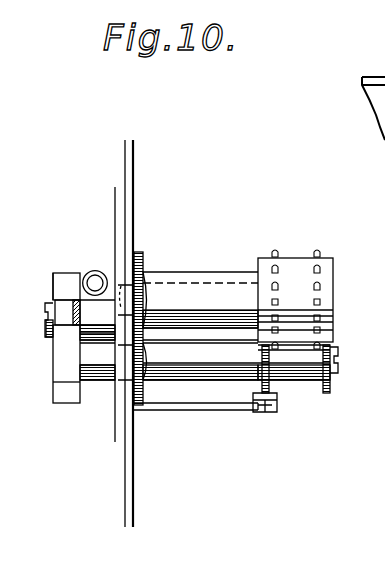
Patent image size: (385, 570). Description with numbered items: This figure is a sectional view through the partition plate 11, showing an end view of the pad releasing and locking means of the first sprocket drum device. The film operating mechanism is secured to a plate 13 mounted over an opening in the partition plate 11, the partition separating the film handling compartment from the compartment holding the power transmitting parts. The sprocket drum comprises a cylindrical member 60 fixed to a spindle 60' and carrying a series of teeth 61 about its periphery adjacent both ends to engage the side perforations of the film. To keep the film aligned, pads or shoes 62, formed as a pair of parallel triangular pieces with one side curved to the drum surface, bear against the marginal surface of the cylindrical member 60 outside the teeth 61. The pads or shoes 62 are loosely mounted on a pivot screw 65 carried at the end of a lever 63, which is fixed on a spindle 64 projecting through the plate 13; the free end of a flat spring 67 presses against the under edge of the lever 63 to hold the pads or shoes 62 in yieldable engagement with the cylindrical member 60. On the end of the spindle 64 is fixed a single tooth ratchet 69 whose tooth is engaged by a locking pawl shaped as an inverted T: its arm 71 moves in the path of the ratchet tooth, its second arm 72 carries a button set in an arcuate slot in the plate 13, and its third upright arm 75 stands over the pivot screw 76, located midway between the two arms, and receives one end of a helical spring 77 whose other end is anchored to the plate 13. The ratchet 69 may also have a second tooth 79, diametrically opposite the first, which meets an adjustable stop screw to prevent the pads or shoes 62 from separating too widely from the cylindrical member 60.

The partition plate 11 is at (128, 168).
The plate 13 is at (114, 225).
The cylindrical member 60 is at (312, 300).
The spindle 60' is at (200, 294).
The teeth 61 is at (312, 268).
The pads or shoes 62 is at (324, 385).
The lever 63 is at (262, 384).
The spindle 64 is at (176, 366).
The pivot screw 65 is at (339, 351).
The flat spring 67 is at (252, 412).
The single tooth ratchet 69 is at (58, 355).
The arm 71 is at (82, 311).
The second arm 72 is at (52, 295).
The third upright arm 75 is at (67, 272).
The pivot screw 76 is at (45, 318).
The helical spring 77 is at (95, 270).
The second tooth 79 is at (58, 397).